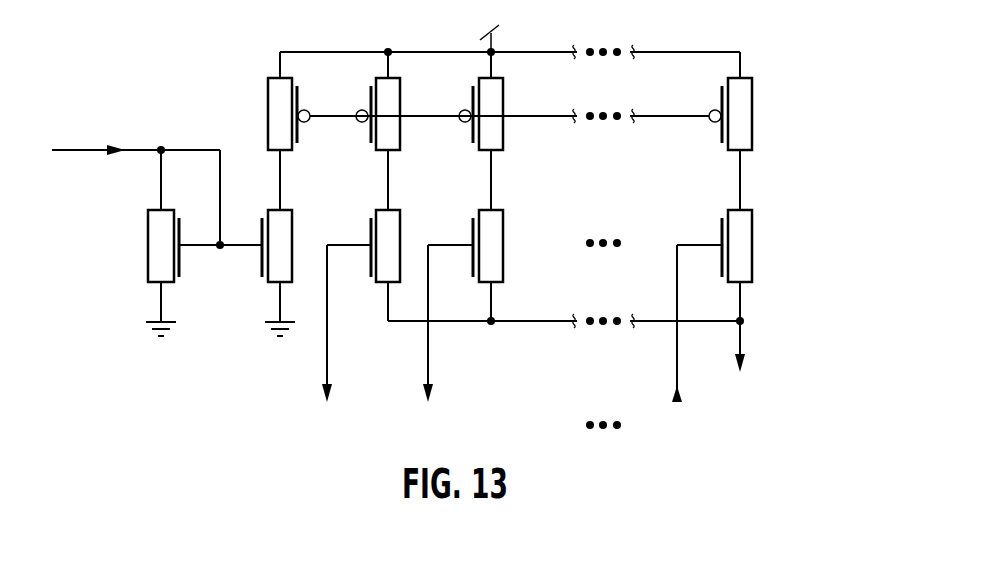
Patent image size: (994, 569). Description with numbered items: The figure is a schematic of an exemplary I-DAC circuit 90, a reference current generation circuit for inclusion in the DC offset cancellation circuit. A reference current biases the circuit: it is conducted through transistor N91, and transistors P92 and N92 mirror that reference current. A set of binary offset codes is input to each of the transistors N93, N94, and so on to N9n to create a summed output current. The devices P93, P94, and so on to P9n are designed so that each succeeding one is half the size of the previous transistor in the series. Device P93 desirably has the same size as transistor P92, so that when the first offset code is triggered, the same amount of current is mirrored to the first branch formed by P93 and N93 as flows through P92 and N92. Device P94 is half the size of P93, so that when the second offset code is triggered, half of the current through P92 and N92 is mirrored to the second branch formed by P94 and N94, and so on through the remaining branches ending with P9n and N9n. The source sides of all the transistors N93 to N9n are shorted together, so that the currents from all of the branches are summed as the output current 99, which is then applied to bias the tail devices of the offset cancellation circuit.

The I-DAC circuit 90 is at (424, 254).
The output current IOUT 99 is at (740, 367).
The transistor N91 is at (142, 244).
The transistor N92 is at (300, 244).
The transistor N93 is at (407, 244).
The transistor N94 is at (509, 244).
The transistor N9n is at (758, 244).
The transistor P92 is at (305, 113).
The device P93 is at (400, 113).
The device P94 is at (503, 113).
The device P9n is at (753, 113).